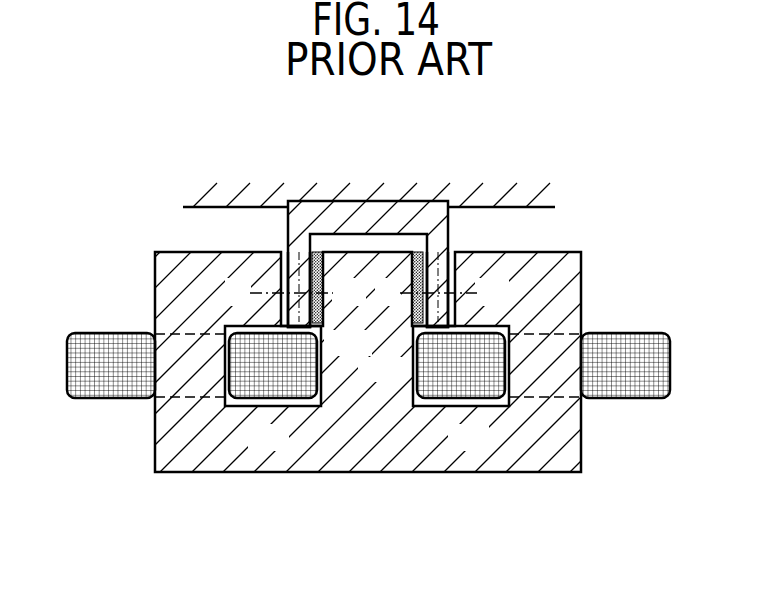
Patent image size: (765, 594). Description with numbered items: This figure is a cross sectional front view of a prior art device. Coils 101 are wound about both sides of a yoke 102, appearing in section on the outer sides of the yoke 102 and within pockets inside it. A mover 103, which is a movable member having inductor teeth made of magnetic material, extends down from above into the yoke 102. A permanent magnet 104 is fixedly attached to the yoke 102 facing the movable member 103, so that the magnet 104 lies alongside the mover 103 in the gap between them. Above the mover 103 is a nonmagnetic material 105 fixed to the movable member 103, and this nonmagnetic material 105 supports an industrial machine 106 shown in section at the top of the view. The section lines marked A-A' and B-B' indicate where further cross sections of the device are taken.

The coils 101 is at (103, 332).
The yoke 102 is at (369, 462).
The mover 103 is at (302, 258).
The permanent magnet 104 is at (320, 310).
The nonmagnetic material 105 is at (421, 206).
The industrial machine 106 is at (310, 188).